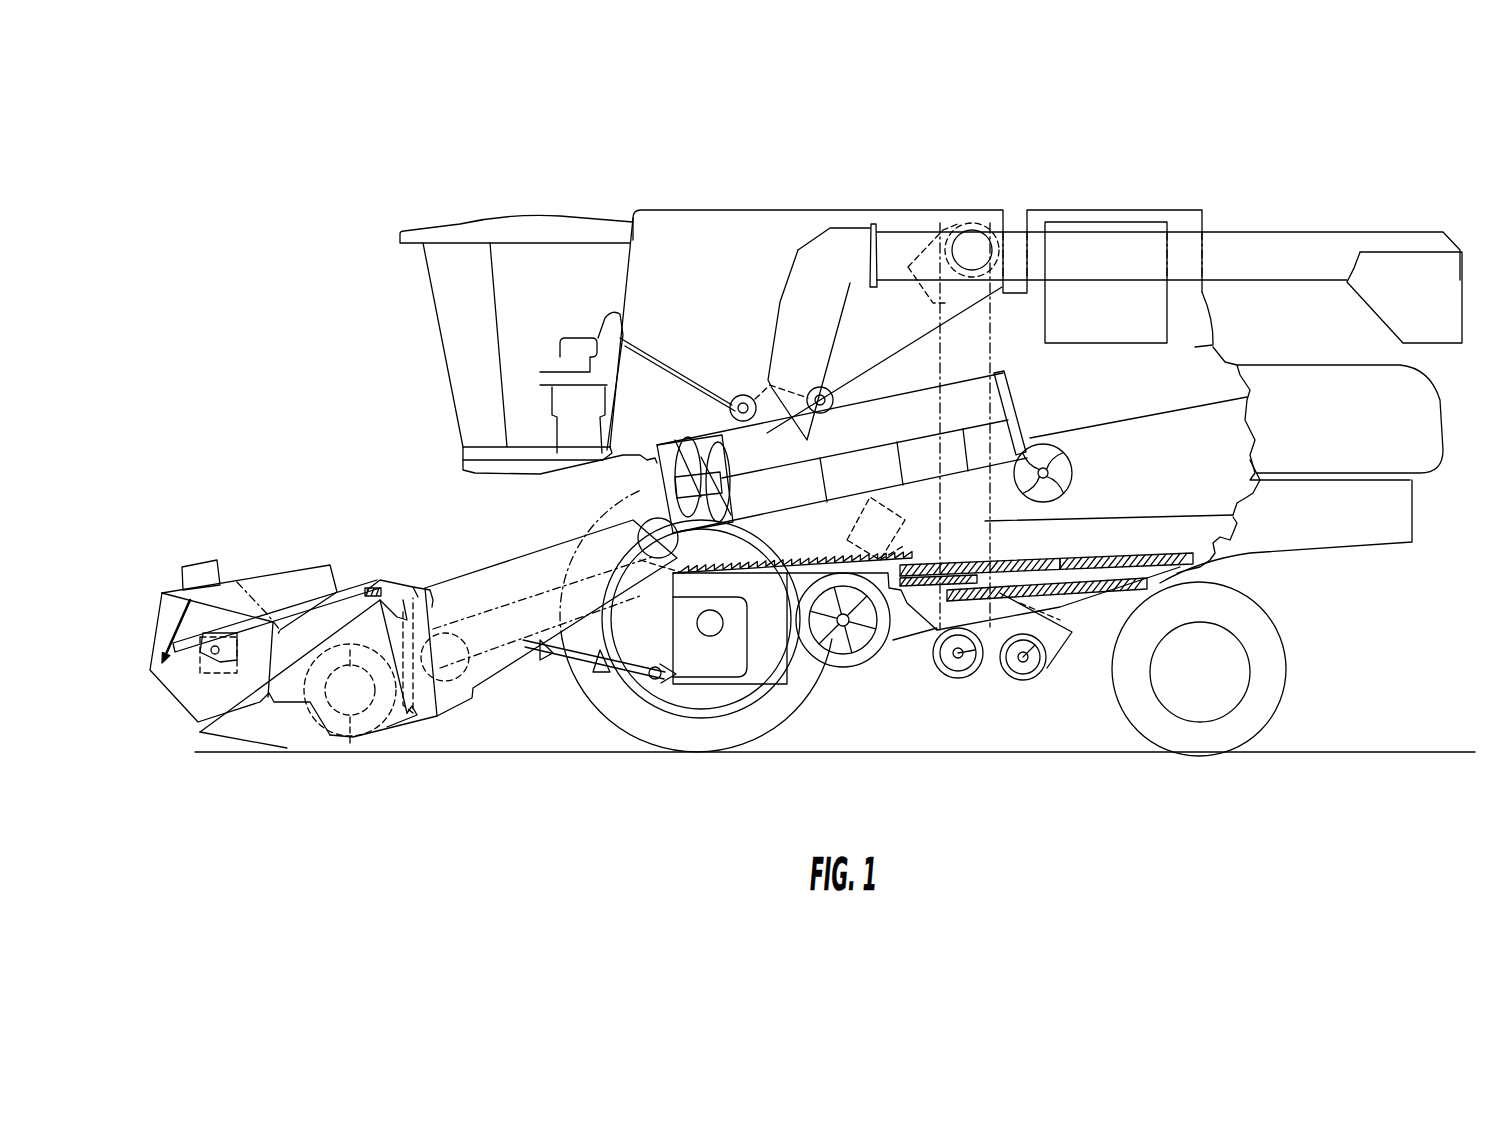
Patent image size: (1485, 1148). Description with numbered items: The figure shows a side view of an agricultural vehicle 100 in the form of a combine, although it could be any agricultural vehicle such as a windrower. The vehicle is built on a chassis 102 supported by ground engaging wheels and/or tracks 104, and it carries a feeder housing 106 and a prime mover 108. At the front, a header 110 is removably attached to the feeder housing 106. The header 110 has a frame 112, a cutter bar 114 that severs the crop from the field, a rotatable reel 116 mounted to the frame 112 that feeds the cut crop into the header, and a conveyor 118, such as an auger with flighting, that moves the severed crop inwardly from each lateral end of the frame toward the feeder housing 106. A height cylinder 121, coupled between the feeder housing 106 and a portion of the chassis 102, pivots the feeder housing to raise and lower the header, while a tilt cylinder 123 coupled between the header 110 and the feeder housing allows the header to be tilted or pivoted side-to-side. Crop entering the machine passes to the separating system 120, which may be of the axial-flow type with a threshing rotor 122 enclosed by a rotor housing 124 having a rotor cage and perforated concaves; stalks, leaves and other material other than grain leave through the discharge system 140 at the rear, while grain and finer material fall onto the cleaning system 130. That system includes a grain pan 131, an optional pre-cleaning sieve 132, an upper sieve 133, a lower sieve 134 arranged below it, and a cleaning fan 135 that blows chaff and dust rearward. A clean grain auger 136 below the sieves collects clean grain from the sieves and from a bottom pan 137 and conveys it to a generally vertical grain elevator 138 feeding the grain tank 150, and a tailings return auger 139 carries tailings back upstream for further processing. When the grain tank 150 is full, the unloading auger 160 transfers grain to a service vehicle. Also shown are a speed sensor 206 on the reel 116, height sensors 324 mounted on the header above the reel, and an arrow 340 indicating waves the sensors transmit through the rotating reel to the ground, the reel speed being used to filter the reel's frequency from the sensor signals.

The agricultural vehicle 100 is at (498, 192).
The chassis 102 is at (1220, 573).
The ground engaging wheels and/or tracks 104 is at (447, 337).
The feeder housing 106 is at (460, 575).
The prime mover 108 is at (1100, 222).
The header 110 is at (249, 550).
The frame 112 is at (400, 725).
The cutter bar 114 is at (204, 742).
The reel 116 is at (173, 643).
The conveyor 118 is at (350, 720).
The separating system 120 is at (582, 498).
The height cylinder 121 is at (600, 680).
The threshing rotor 122 is at (690, 453).
The tilt cylinder 123 is at (400, 607).
The rotor housing 124 is at (885, 415).
The cleaning system 130 is at (914, 683).
The grain pan 131 is at (685, 605).
The pre-cleaning sieve 132 is at (1027, 560).
The upper sieve 133 is at (1127, 553).
The lower sieve 134 is at (1083, 602).
The cleaning fan 135 is at (853, 637).
The clean grain auger 136 is at (957, 667).
The bottom pan 137 is at (1113, 593).
The grain elevator 138 is at (993, 343).
The tailings return auger 139 is at (908, 537).
The discharge system 140 is at (1378, 573).
The grain tank 150 is at (690, 223).
The unloading auger 160 is at (1290, 237).
The speed sensor 206 is at (262, 612).
The height sensors 324 is at (190, 565).
The arrow 340 is at (167, 613).